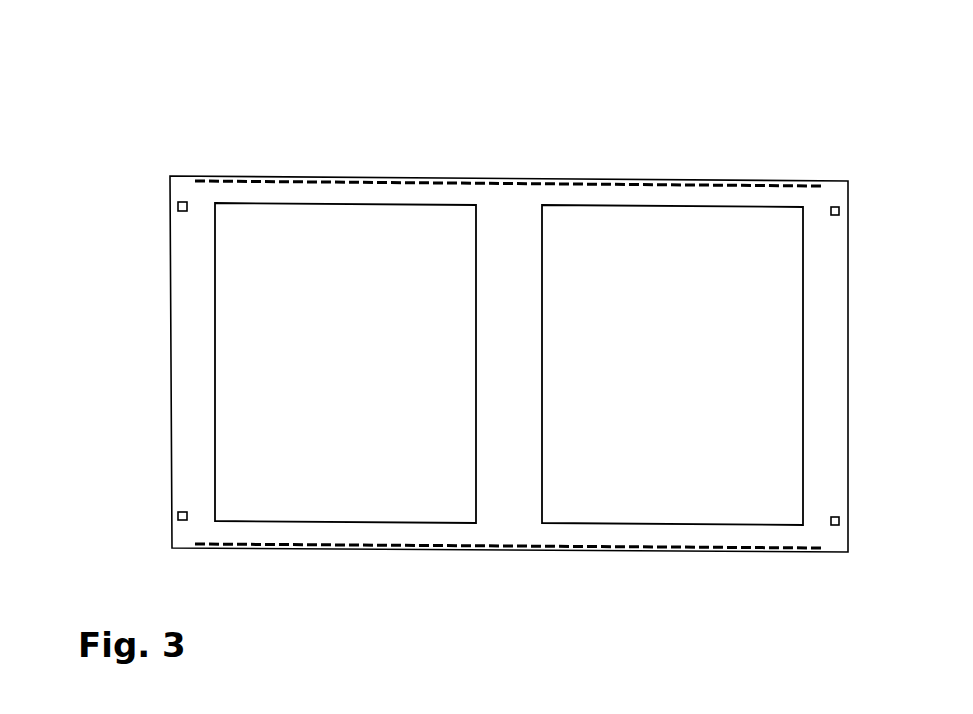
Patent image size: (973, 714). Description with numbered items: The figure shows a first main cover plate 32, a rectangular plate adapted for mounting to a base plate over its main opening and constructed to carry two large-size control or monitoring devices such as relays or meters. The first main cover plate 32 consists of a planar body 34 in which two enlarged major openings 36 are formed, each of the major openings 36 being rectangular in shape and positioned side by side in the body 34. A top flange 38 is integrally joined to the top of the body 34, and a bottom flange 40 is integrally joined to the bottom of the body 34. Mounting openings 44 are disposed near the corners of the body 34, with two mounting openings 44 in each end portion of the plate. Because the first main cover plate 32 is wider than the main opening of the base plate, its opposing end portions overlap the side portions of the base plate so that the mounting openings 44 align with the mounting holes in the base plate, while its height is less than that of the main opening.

The first main cover plate 32 is at (622, 149).
The planar body 34 is at (498, 508).
The major openings 36 is at (272, 350).
The top flange 38 is at (327, 192).
The bottom flange 40 is at (660, 545).
The mounting openings 44 is at (175, 197).